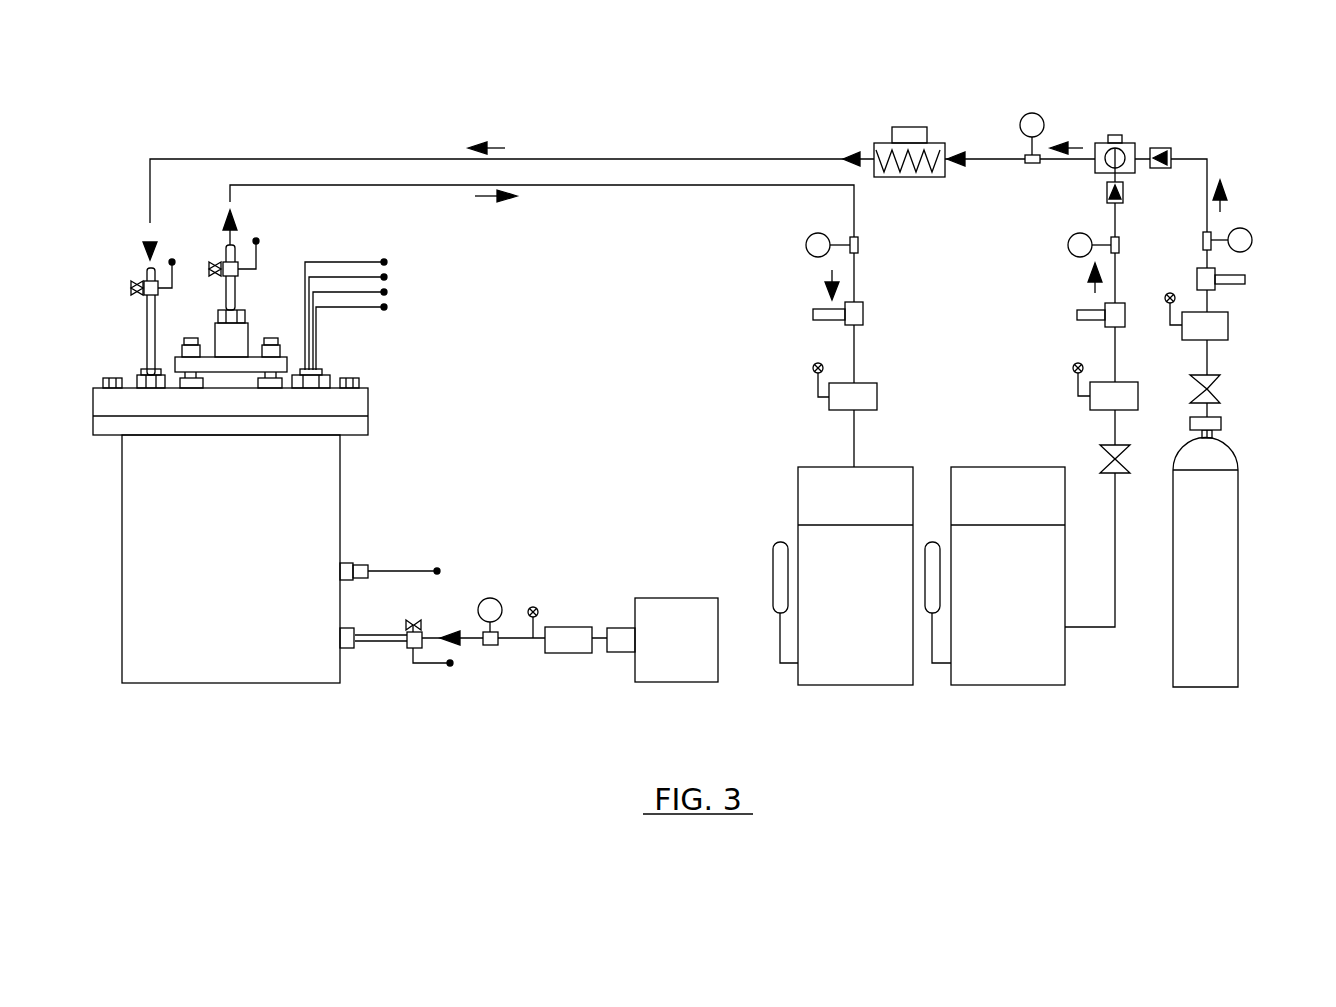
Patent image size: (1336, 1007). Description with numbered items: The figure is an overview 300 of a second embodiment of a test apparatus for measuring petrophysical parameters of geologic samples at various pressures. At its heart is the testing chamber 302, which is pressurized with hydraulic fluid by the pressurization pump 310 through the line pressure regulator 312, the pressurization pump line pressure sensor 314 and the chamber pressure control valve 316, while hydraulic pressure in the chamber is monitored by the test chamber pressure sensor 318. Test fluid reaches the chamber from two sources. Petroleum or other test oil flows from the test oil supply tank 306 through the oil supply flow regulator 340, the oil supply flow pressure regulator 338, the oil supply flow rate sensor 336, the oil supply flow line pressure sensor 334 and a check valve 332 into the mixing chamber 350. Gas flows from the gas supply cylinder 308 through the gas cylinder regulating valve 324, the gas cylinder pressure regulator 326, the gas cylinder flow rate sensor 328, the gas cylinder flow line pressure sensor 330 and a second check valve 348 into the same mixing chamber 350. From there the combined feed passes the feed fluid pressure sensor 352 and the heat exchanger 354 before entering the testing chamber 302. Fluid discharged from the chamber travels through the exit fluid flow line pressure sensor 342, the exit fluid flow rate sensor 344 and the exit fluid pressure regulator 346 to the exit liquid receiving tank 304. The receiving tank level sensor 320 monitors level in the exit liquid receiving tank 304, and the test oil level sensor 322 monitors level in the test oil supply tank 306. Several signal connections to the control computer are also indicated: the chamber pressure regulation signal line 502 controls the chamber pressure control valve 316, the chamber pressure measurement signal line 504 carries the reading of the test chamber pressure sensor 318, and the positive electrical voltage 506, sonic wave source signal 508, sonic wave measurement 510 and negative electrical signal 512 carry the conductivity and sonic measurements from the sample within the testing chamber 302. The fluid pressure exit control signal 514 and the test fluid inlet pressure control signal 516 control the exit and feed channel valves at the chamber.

The overview 300 is at (378, 110).
The testing chamber 302 is at (188, 668).
The exit liquid receiving tank 304 is at (808, 503).
The test oil supply tank 306 is at (1005, 480).
The gas supply cylinder 308 is at (1205, 675).
The pressurization pump 310 is at (680, 598).
The line pressure regulator 312 is at (586, 627).
The pressurization pump line pressure sensor 314 is at (491, 597).
The chamber pressure control valve 316 is at (422, 634).
The test chamber pressure sensor 318 is at (362, 562).
The receiving tank level sensor 320 is at (771, 583).
The test oil level sensor 322 is at (931, 540).
The gas cylinder regulating valve 324 is at (1215, 392).
The gas cylinder pressure regulator 326 is at (1230, 336).
The gas cylinder flow rate sensor 328 is at (1238, 273).
The gas cylinder flow line pressure sensor 330 is at (1246, 228).
The check valve 332 is at (1126, 195).
The oil supply flow line pressure sensor 334 is at (1082, 232).
The oil supply flow rate sensor 336 is at (1084, 320).
The oil supply flow pressure regulator 338 is at (1090, 400).
The oil supply flow regulator 340 is at (1120, 460).
The exit fluid flow line pressure sensor 342 is at (815, 232).
The exit fluid flow rate sensor 344 is at (822, 322).
The exit fluid pressure regulator 346 is at (829, 403).
The check valve 348 is at (1175, 152).
The mixing chamber 350 is at (1135, 143).
The feed fluid pressure sensor 352 is at (1045, 118).
The heat exchanger 354 is at (890, 138).
The chamber pressure regulation signal line 502 is at (453, 667).
The chamber pressure measurement signal line 504 is at (439, 569).
The positive electrical voltage 506 is at (390, 307).
The sonic wave source signal 508 is at (390, 292).
The sonic wave measurement 510 is at (390, 277).
The negative electrical signal 512 is at (390, 262).
The fluid pressure exit control signal 514 is at (262, 256).
The test fluid inlet pressure control signal 516 is at (180, 268).